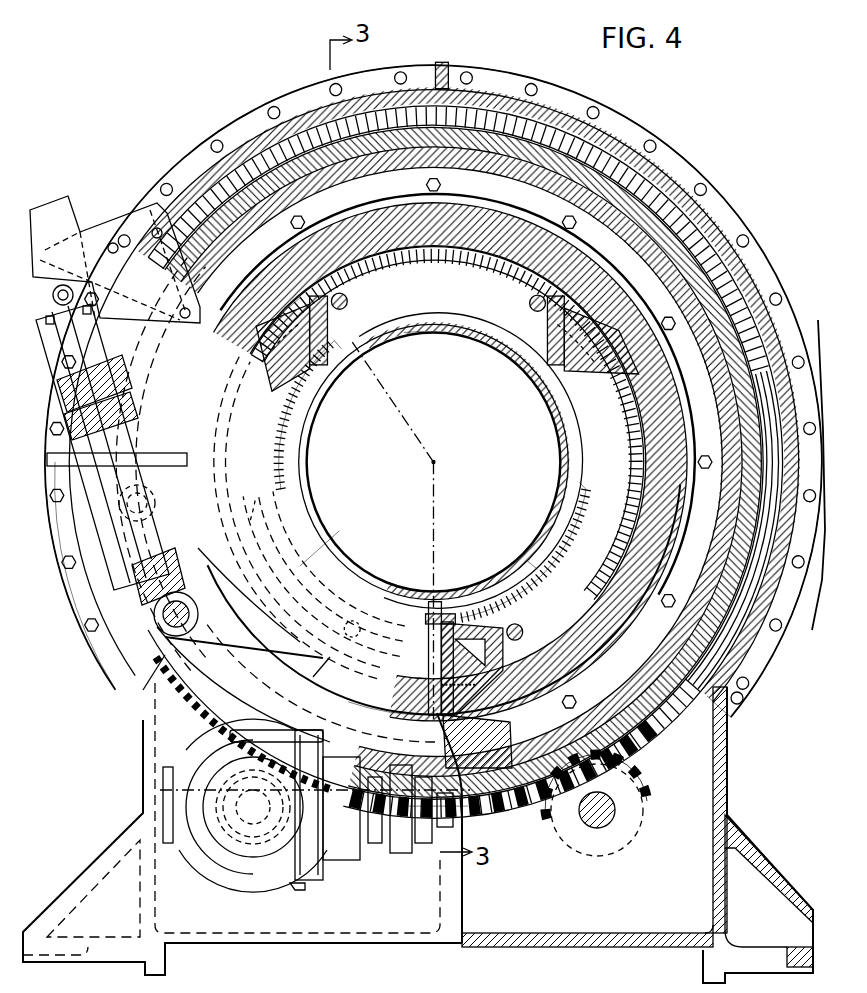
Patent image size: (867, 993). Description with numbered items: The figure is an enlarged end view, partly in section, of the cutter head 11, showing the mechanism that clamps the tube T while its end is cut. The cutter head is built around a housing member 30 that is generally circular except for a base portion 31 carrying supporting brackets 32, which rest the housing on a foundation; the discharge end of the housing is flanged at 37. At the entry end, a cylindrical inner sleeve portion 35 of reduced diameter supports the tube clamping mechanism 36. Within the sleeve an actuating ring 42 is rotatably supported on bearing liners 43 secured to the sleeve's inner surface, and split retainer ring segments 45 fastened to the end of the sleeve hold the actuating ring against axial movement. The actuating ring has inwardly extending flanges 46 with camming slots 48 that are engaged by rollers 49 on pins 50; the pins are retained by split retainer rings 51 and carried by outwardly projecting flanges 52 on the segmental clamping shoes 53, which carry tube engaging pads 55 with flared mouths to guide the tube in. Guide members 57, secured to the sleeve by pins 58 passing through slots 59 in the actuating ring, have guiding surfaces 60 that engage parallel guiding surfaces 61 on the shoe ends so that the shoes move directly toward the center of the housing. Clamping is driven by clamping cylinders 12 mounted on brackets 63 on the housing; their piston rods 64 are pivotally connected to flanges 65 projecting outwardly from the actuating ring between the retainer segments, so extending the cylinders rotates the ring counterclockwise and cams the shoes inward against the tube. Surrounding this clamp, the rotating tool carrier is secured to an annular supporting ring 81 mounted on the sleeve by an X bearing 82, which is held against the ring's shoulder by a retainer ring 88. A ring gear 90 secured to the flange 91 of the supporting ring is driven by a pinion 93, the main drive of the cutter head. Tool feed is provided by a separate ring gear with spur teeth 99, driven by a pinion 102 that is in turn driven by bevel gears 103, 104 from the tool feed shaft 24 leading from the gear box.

The cutter head 11 is at (224, 107).
The clamping cylinders 12 is at (68, 363).
The tool feed shaft 24 is at (446, 858).
The housing member 30 is at (500, 95).
The base portion 31 is at (728, 781).
The supporting brackets 32 is at (45, 965).
The cylindrical inner sleeve portion 35 is at (346, 262).
The tube clamping mechanism 36 is at (348, 414).
The flange 37 is at (78, 602).
The actuating ring 42 is at (425, 302).
The bearing liners 43 is at (648, 374).
The split retainer ring segments 45 is at (383, 700).
The inwardly extending flanges 46 is at (409, 338).
The camming slots 48 is at (460, 270).
The rollers 49 is at (382, 354).
The pins 50 is at (349, 304).
The split retainer rings 51 is at (302, 563).
The outwardly projecting flanges 52 is at (428, 340).
The segmental clamping shoes 53 is at (361, 352).
The tube engaging pads 55 is at (318, 496).
The guide members 57 is at (262, 373).
The pins 58 is at (262, 349).
The slots 59 is at (590, 297).
The guiding surfaces 60 is at (525, 352).
The guiding surfaces 61 is at (490, 370).
The brackets 63 is at (105, 225).
The piston rods 64 is at (152, 512).
The flanges 65 is at (232, 645).
The annular supporting ring 81 is at (415, 170).
The X bearing 82 is at (752, 272).
The retainer ring 88 is at (632, 738).
The ring gear 90 is at (660, 715).
The flange 91 is at (332, 177).
The pinion 93 is at (650, 840).
The spur teeth 99 is at (488, 812).
The pinion 102 is at (205, 822).
The bevel gear 103 is at (228, 876).
The bevel gear 104 is at (325, 886).
The tube T is at (535, 560).